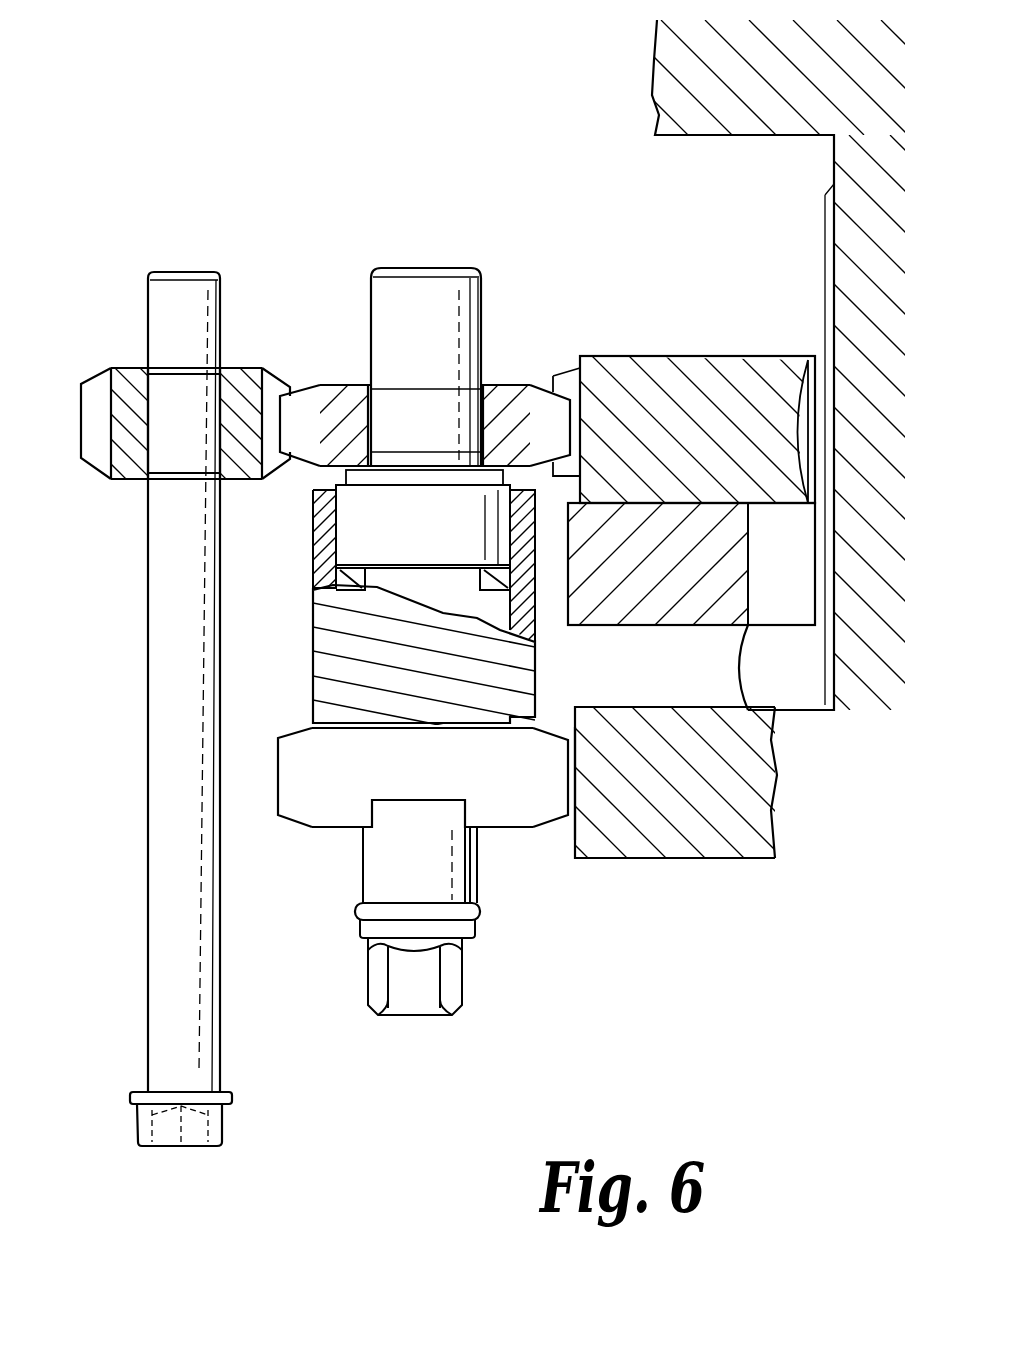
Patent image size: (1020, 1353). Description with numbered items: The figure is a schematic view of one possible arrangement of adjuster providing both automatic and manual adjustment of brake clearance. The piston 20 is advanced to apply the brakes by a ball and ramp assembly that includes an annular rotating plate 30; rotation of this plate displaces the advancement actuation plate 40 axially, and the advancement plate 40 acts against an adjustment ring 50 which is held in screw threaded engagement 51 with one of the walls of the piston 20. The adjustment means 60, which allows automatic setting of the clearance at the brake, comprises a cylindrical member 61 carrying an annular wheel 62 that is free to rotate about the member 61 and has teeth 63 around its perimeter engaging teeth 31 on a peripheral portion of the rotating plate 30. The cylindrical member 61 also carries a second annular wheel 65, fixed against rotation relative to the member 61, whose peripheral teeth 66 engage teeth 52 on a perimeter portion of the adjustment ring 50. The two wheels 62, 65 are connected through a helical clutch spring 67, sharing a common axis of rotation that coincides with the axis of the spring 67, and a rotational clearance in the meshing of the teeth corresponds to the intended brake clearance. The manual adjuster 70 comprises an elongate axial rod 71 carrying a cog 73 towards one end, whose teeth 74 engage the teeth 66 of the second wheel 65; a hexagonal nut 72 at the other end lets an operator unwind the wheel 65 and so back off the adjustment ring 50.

The piston 20 is at (722, 137).
The annular rotating plate 30 is at (685, 858).
The teeth on the rotating plate 31 is at (562, 838).
The advancement actuation plate 40 is at (750, 590).
The adjustment ring 50 is at (650, 356).
The screw threaded engagement 51 is at (804, 356).
The teeth on the adjustment ring 52 is at (576, 369).
The adjustment means 60 is at (394, 800).
The cylindrical member 61 is at (357, 882).
The annular wheel 62 is at (505, 832).
The teeth of the annular wheel 63 is at (279, 772).
The second annular wheel 65 is at (504, 386).
The peripheral teeth of the second annular wheel 66 is at (303, 385).
The helical clutch spring 67 is at (310, 537).
The manual adjuster 70 is at (195, 720).
The elongate axial rod 71 is at (146, 950).
The hexagonal nut 72 is at (196, 1146).
The cog 73 is at (130, 483).
The teeth of the cog 74 is at (80, 440).